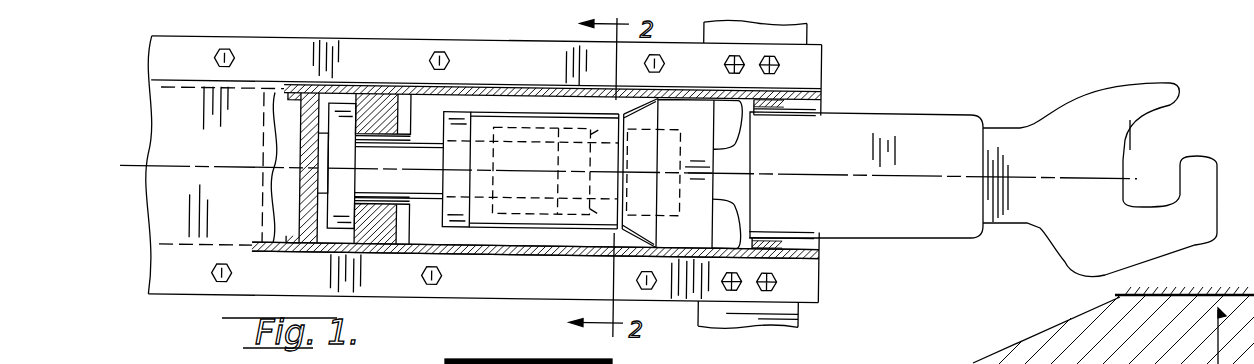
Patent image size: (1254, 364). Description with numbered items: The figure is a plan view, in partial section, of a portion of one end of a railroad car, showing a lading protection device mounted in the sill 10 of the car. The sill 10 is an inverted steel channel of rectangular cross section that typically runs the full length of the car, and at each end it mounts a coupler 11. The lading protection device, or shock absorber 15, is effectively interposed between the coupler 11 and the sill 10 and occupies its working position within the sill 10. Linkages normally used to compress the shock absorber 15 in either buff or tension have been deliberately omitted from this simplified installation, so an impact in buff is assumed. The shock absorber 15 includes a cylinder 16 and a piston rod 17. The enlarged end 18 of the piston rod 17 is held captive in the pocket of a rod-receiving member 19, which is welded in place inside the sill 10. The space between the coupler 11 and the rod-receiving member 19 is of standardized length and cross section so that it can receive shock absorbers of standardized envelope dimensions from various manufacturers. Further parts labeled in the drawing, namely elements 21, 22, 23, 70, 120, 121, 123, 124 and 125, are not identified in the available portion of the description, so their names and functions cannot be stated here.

The sill 10 is at (463, 89).
The coupler 11 is at (1070, 102).
The lading protection device 15 is at (543, 252).
The cylinder 16 is at (512, 115).
The piston rod 17 is at (422, 150).
The enlarged end 18 is at (320, 162).
The rod-receiving member 19 is at (378, 102).
The bolt 21 is at (563, 171).
The coupling 22 is at (700, 163).
The end cap 23 is at (457, 224).
The member 70 is at (781, 352).
The base 120 is at (1052, 338).
The member 121 is at (961, 329).
The member 123 is at (885, 329).
The member 124 is at (957, 340).
The member 125 is at (883, 340).